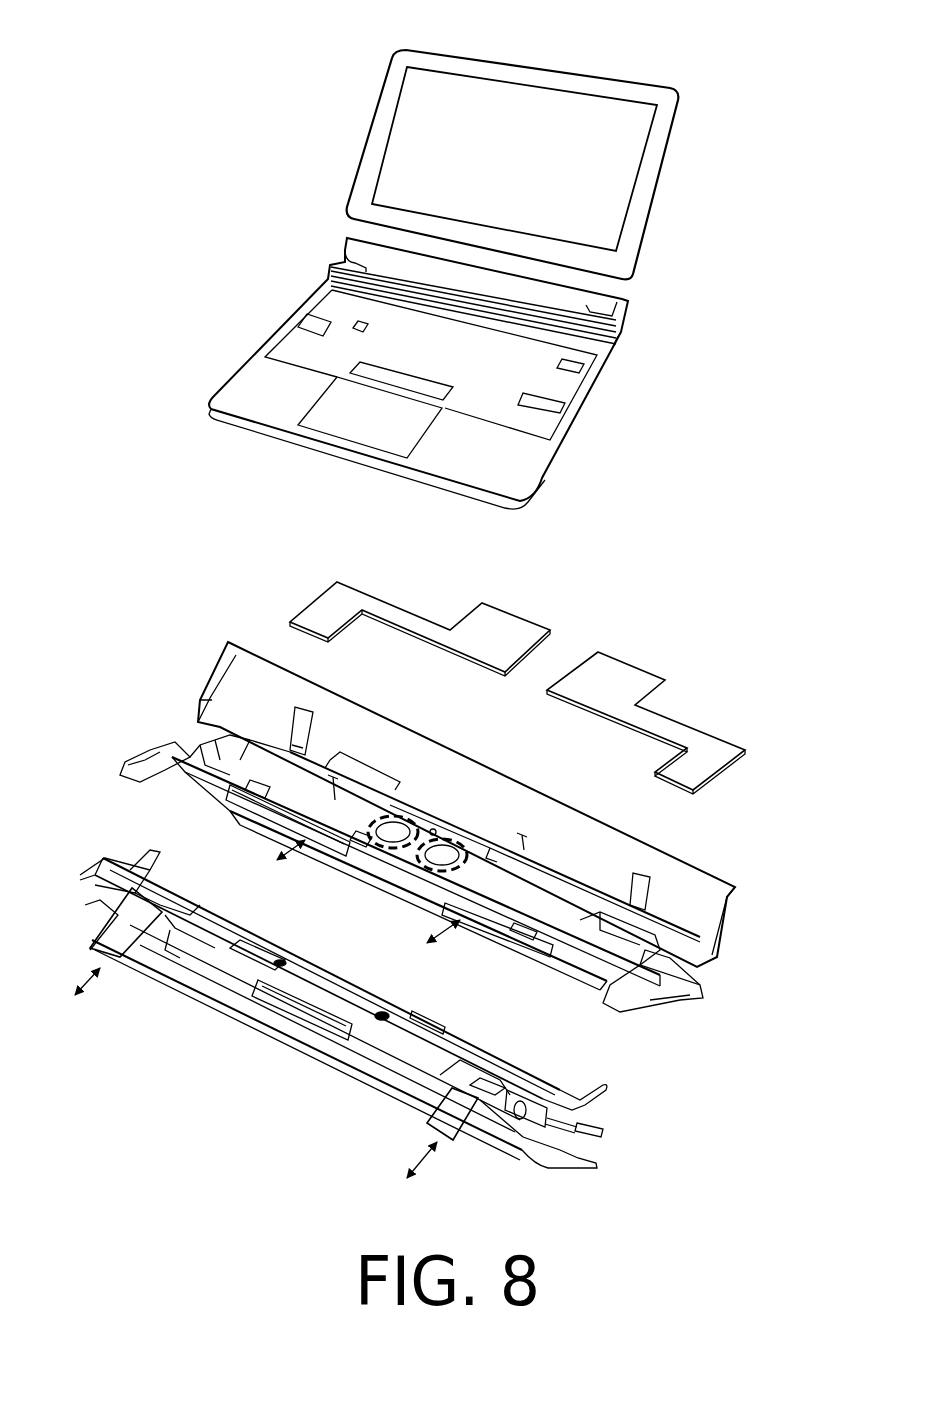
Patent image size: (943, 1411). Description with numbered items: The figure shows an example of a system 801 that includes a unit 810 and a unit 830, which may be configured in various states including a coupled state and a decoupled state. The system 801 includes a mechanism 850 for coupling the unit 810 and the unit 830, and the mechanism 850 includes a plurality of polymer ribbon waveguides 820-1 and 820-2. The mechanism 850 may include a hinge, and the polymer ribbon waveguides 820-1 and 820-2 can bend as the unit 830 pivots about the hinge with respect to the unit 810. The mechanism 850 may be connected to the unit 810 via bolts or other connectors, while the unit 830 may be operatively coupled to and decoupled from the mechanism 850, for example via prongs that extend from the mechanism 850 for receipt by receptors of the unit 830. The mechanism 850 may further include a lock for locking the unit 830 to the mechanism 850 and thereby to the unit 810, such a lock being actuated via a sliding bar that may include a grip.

The system 801 is at (297, 81).
The unit 830 is at (600, 78).
The unit 810 is at (233, 375).
The mechanism 850 is at (660, 297).
The polymer ribbon waveguide 820-1 is at (393, 608).
The polymer ribbon waveguide 820-2 is at (682, 720).